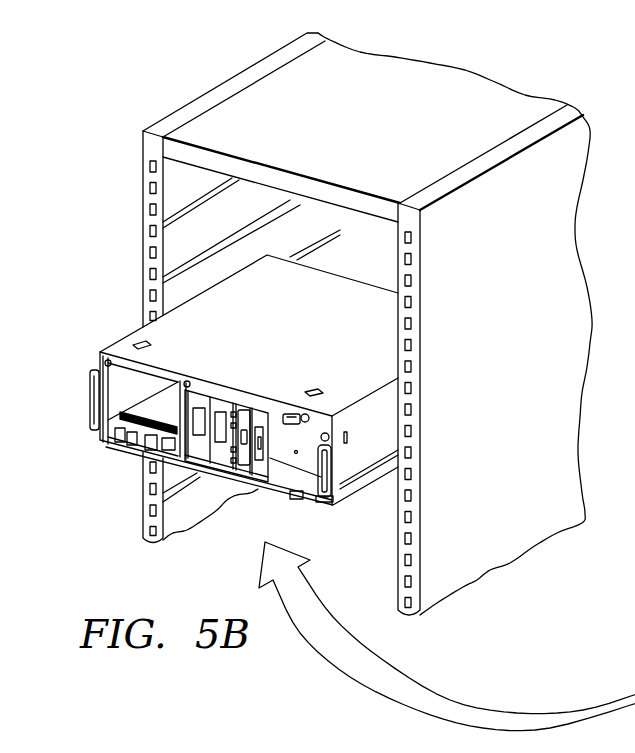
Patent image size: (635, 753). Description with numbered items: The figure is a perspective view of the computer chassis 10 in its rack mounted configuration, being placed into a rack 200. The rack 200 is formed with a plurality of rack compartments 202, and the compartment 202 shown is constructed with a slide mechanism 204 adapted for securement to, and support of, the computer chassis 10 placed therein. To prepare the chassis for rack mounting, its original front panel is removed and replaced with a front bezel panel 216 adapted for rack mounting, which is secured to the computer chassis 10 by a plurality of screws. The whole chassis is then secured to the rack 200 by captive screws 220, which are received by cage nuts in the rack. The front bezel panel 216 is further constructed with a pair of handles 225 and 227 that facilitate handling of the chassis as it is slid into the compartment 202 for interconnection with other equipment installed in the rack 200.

The computer chassis 10 is at (277, 342).
The rack 200 is at (520, 376).
The rack compartment 202 is at (190, 232).
The slide mechanism 204 is at (384, 465).
The front bezel panel 216 is at (289, 479).
The captive screws 220 is at (95, 372).
The handle 225 is at (92, 425).
The handle 227 is at (322, 491).